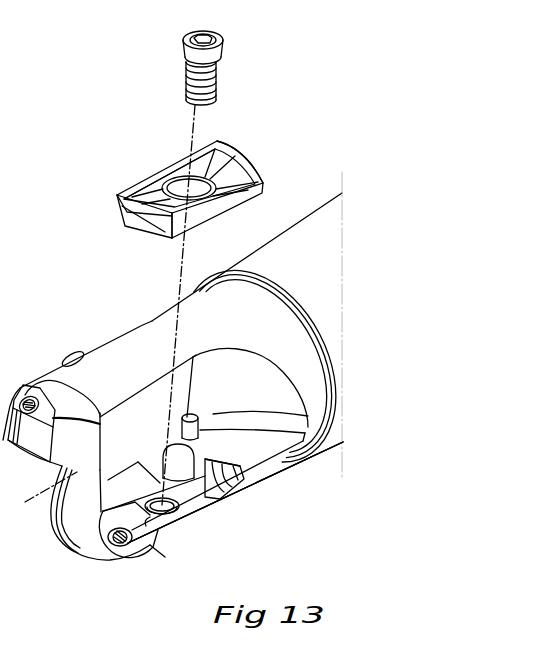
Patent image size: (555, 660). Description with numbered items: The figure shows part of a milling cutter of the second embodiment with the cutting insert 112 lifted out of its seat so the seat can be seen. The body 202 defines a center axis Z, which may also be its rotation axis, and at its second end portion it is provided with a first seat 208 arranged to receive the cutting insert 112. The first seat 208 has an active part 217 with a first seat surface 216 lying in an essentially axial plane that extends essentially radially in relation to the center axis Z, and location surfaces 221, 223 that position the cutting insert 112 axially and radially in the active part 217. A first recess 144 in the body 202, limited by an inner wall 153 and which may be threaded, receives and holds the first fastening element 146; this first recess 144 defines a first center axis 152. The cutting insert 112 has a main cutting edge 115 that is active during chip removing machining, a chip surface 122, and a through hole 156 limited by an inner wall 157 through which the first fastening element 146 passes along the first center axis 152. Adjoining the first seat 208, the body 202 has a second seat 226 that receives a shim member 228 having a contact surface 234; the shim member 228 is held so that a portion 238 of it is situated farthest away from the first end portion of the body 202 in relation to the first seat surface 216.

The first fastening element 146 is at (222, 76).
The cutting insert 112 is at (211, 178).
The through hole 156 is at (178, 182).
The chip surface 122 is at (228, 172).
The body 202 is at (341, 198).
The inner wall 157 is at (200, 189).
The main cutting edge 115 is at (205, 208).
The first center axis 152 is at (182, 273).
The first recess 144 is at (176, 494).
The inner wall 153 is at (160, 497).
The portion of the shim member 238 is at (128, 513).
The center axis Z is at (42, 495).
The location surface 221 is at (102, 518).
The location surface 223 is at (209, 475).
The first seat surface 216 is at (200, 498).
The first seat 208 is at (210, 530).
The active part 217 is at (210, 530).
The contact surface 234 is at (146, 526).
The shim member 228 is at (97, 545).
The second seat 226 is at (144, 565).